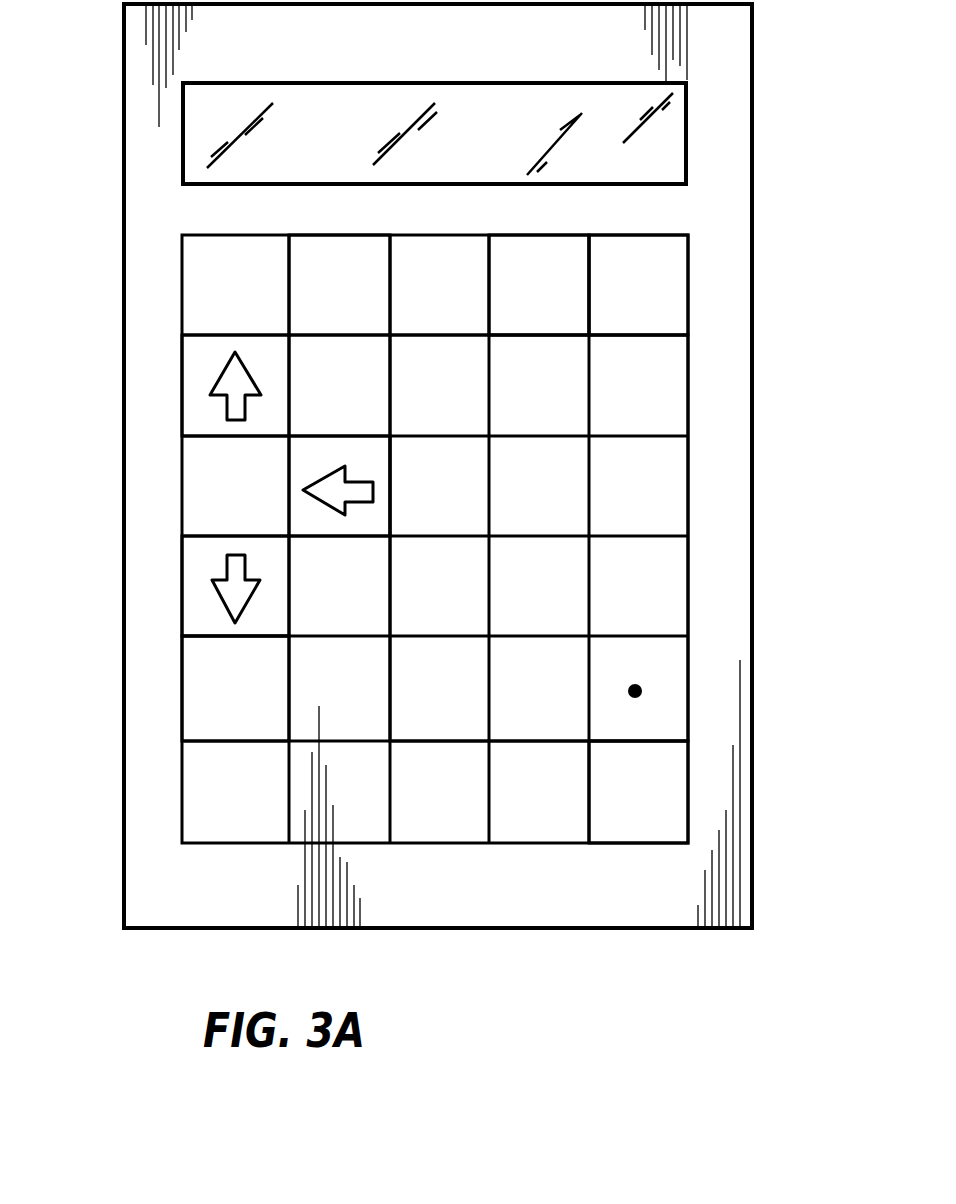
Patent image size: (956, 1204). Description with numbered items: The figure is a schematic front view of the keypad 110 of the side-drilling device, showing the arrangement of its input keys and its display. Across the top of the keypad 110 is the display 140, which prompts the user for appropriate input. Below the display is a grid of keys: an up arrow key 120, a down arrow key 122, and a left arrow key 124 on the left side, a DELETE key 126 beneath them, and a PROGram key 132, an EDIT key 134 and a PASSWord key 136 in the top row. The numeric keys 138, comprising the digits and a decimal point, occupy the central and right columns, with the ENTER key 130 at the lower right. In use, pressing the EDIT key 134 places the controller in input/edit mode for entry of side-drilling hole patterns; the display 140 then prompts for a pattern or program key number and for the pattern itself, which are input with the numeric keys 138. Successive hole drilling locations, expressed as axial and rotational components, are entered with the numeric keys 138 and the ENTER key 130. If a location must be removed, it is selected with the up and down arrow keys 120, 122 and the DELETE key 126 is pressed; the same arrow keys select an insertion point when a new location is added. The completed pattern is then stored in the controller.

The keypad 110 is at (131, 216).
The up arrow key 120 is at (195, 415).
The down arrow key 122 is at (195, 598).
The left arrow key 124 is at (296, 485).
The DELETE key 126 is at (200, 663).
The ENTER key 130 is at (642, 825).
The PROGram key 132 is at (358, 257).
The EDIT key 134 is at (557, 257).
The PASSWord key 136 is at (667, 263).
The numeric keys 138 is at (675, 417).
The display 140 is at (662, 137).